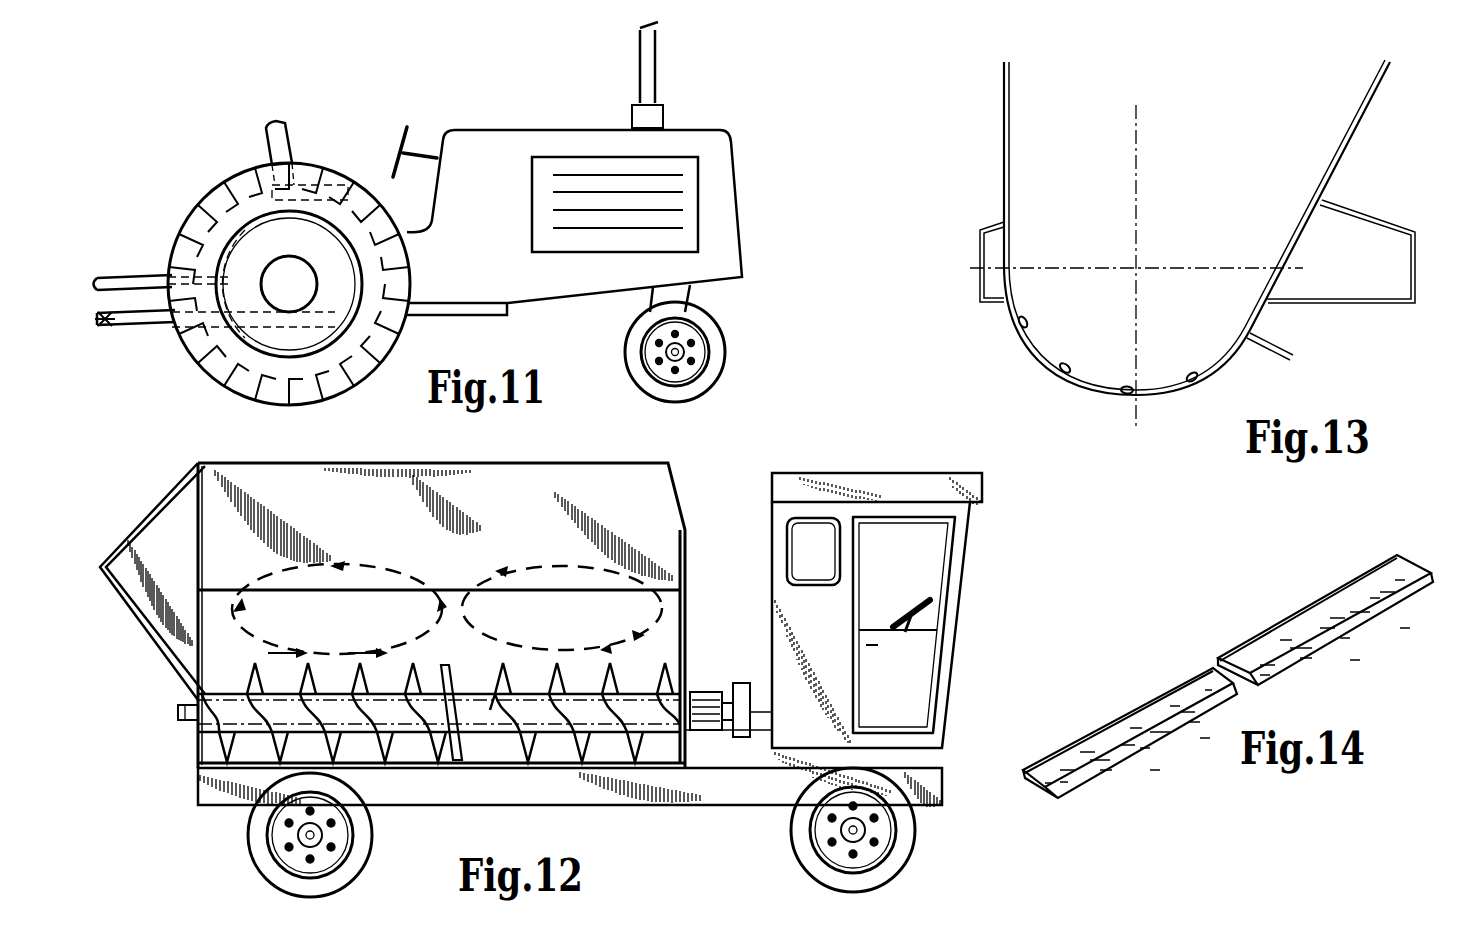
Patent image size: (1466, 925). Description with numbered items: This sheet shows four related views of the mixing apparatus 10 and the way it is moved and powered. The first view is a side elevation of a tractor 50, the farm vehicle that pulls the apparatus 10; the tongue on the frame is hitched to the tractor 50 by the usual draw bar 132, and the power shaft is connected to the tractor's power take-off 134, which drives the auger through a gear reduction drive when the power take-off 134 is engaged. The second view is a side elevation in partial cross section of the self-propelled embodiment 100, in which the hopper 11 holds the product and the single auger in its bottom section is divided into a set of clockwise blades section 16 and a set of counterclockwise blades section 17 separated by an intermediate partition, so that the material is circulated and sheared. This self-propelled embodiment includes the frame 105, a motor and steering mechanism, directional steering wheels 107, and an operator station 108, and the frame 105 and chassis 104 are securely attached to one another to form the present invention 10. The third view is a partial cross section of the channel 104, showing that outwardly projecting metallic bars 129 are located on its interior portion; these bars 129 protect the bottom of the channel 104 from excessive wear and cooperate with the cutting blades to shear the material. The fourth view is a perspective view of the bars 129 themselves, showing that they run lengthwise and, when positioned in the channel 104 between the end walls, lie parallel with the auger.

In FIG. 11, the tractor 50 is at (508, 125).
In FIG. 11, the power take-off 134 is at (148, 275).
In FIG. 11, the draw bar 132 is at (162, 326).
In FIG. 12, the feed mixer 100 is at (582, 653).
In FIG. 12, the hopper 11 is at (237, 530).
In FIG. 12, the counterclockwise blades section 17 is at (367, 693).
In FIG. 12, the clockwise blades section 16 is at (560, 673).
In FIG. 12, the frame 105 is at (600, 804).
In FIG. 12, the directional steering wheels 107 is at (918, 837).
In FIG. 12, the channel 104 is at (918, 605).
In FIG. 12, the operator station 108 is at (908, 547).
In FIG. 12, the apparatus 10 is at (922, 607).
In FIG. 13, the metallic bars 129 is at (1062, 366).
In FIG. 14, the metallic bars 129 is at (1148, 710).